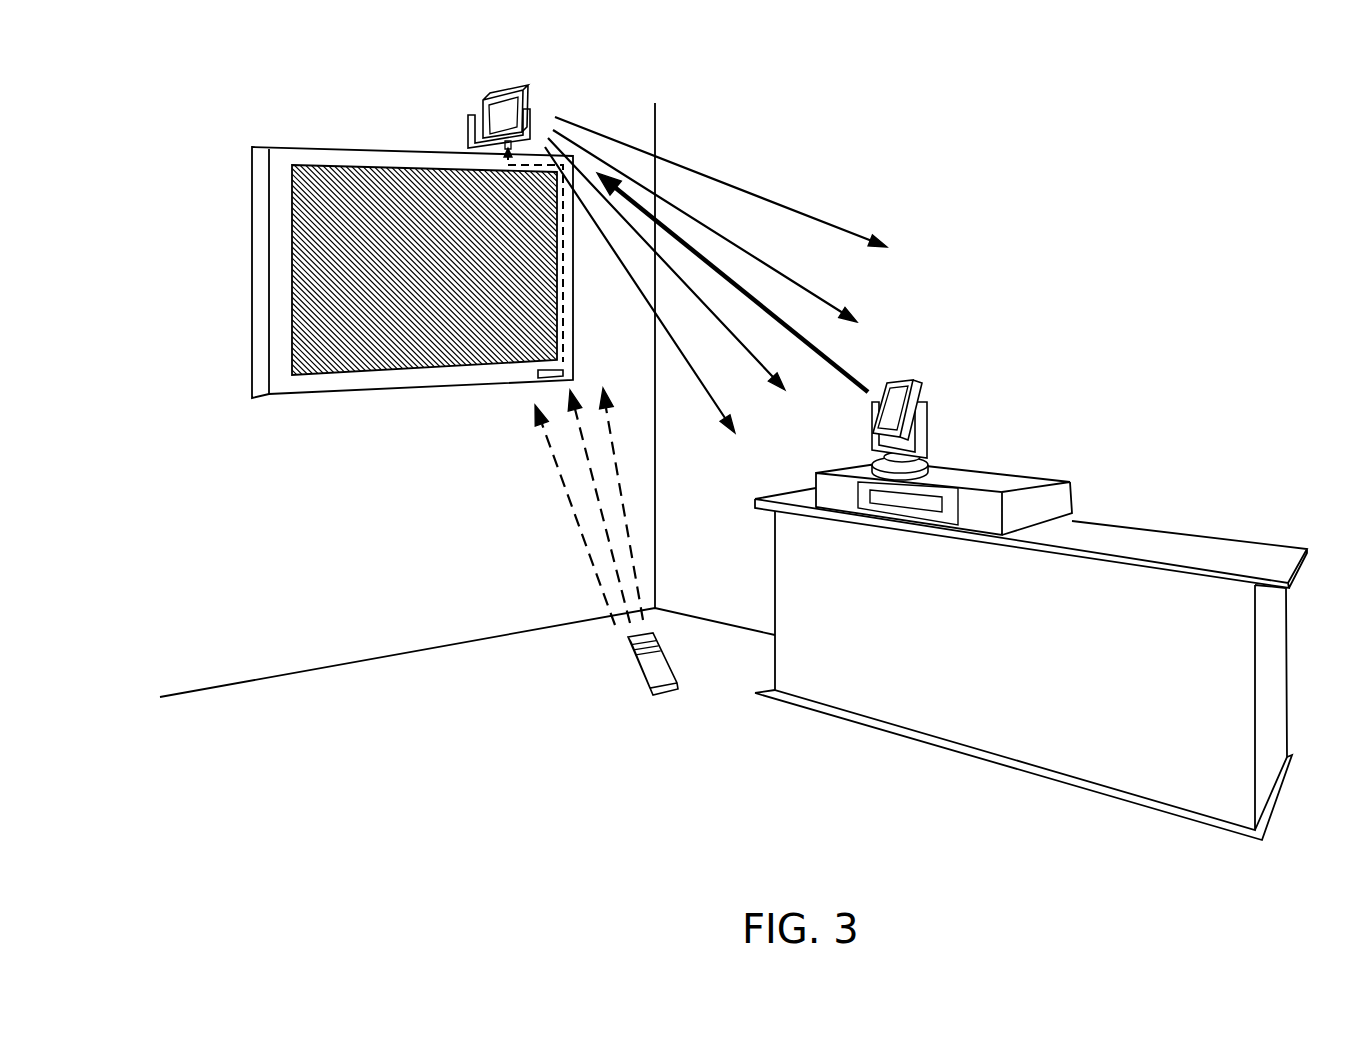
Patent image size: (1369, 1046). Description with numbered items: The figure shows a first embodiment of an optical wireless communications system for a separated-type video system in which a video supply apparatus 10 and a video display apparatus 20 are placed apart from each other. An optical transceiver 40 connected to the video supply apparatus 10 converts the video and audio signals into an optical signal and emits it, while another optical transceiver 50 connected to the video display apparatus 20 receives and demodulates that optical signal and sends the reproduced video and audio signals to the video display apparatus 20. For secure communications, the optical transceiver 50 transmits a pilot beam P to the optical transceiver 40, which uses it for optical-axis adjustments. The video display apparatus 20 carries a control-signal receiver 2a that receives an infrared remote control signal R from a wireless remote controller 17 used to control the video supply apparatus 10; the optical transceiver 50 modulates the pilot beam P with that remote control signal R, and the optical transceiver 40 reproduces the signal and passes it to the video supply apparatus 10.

The video supply apparatus 10 is at (1029, 475).
The video display apparatus 20 is at (250, 285).
The control-signal receiver 2a is at (566, 263).
The optical transceiver 50 is at (490, 95).
The optical transceiver 40 is at (921, 380).
The wireless remote controller 17 is at (640, 673).
The pilot beam P is at (811, 216).
The remote control signal R is at (568, 493).